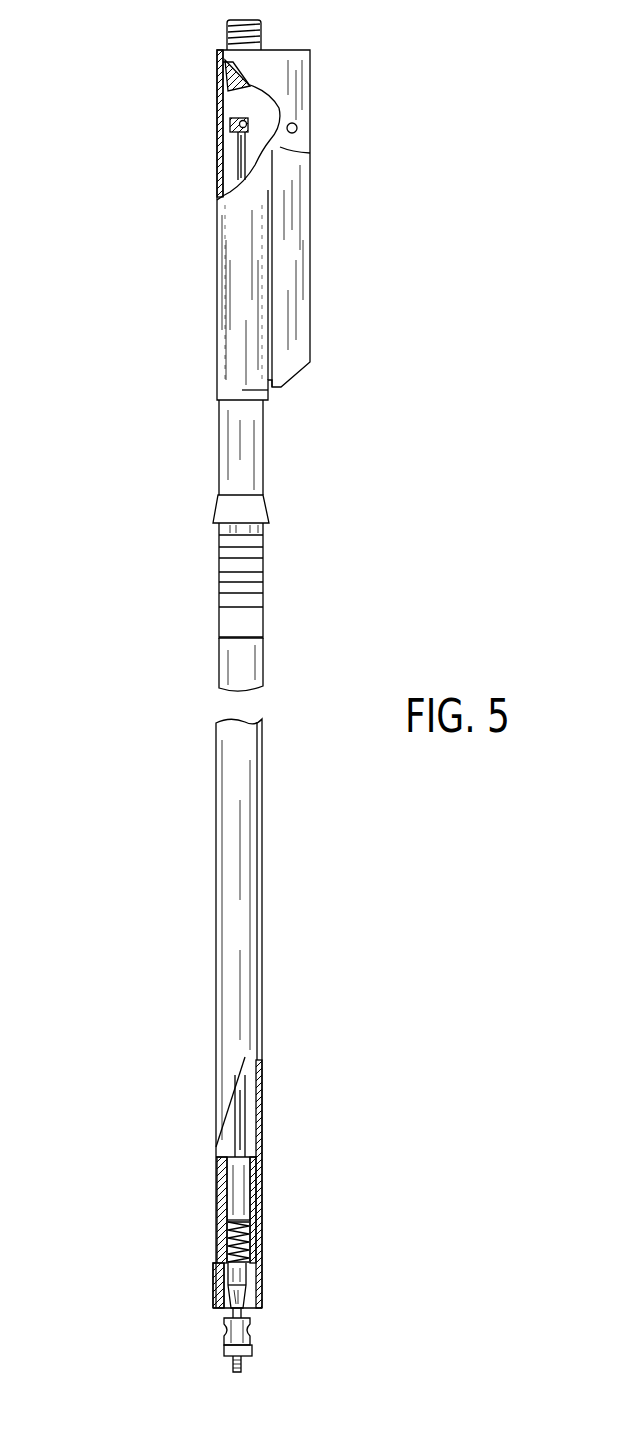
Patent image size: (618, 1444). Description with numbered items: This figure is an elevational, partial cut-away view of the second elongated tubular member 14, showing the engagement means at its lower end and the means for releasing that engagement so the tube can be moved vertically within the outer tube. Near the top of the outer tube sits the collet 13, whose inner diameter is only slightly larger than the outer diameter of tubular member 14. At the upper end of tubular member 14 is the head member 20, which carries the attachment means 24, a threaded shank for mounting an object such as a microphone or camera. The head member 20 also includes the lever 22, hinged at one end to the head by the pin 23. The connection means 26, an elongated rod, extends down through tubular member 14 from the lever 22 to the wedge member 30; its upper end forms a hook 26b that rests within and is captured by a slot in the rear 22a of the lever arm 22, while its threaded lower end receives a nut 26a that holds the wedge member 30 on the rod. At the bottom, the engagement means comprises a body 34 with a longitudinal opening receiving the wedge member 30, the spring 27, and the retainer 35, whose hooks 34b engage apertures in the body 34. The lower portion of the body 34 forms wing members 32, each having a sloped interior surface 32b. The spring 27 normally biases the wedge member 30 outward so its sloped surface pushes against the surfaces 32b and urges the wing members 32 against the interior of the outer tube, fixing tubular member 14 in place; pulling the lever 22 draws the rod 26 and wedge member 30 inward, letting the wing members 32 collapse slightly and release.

The collet 13 is at (215, 508).
The second elongated tubular member 14 is at (263, 449).
The head member 20 is at (233, 293).
The lever 22 is at (310, 285).
The rear of lever arm 22a is at (230, 125).
The pin 23 is at (298, 130).
The attachment means 24 is at (262, 33).
The connection means 26 is at (240, 157).
The nut 26a is at (252, 1352).
The hook 26b is at (240, 118).
The spring 27 is at (258, 1240).
The wedge member 30 is at (220, 1340).
The wing members 32 is at (216, 1288).
The sloped interior surface 32b is at (258, 1303).
The body 34 is at (214, 1231).
The hooks 34b is at (257, 1188).
The retainer 35 is at (235, 1175).